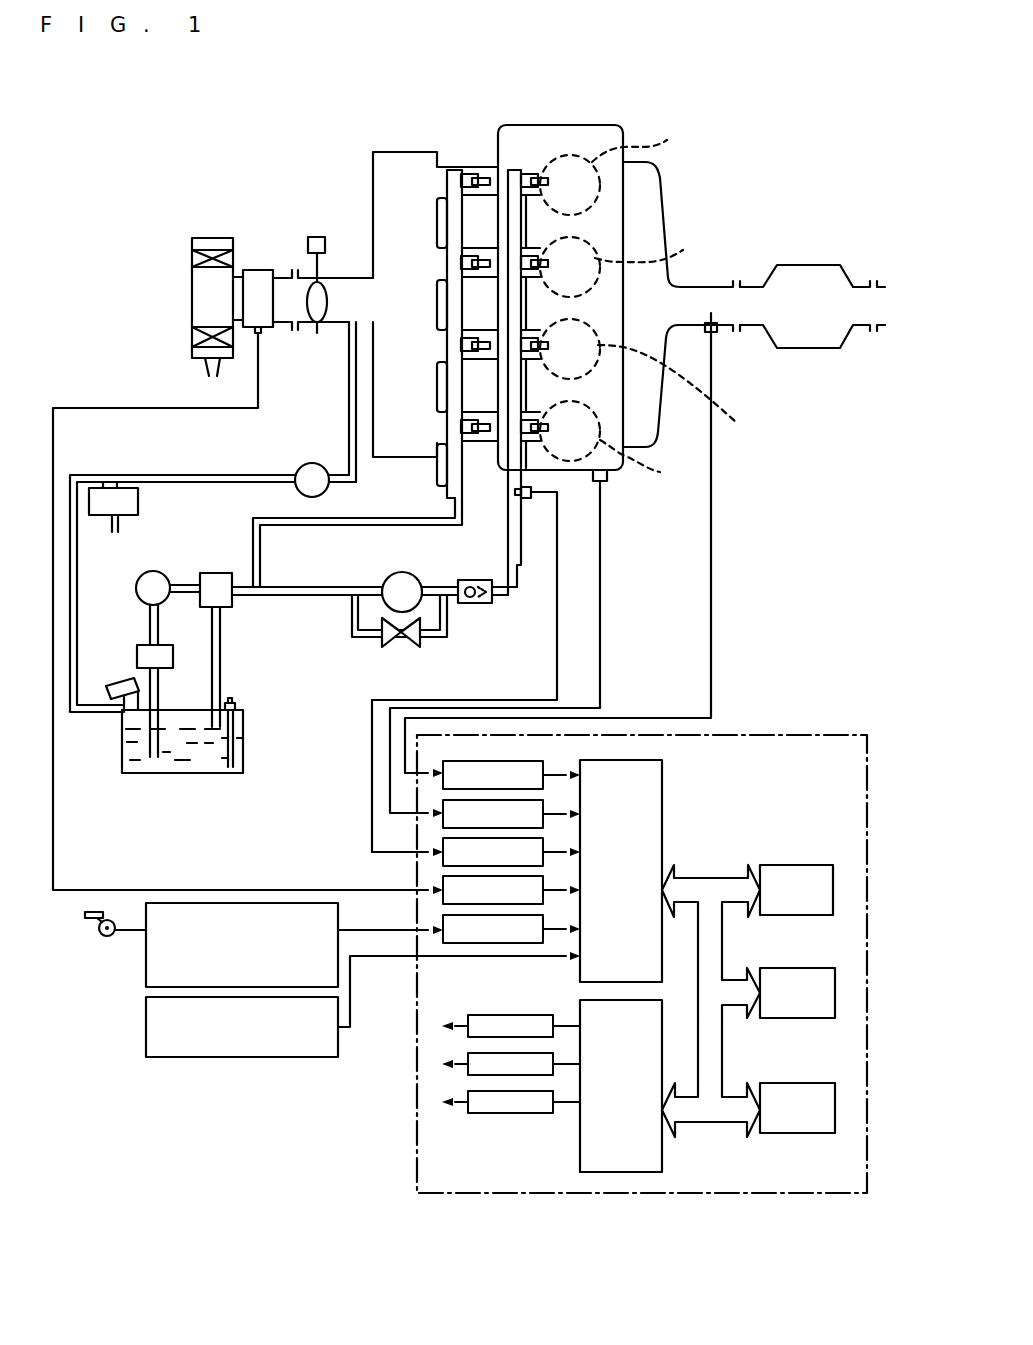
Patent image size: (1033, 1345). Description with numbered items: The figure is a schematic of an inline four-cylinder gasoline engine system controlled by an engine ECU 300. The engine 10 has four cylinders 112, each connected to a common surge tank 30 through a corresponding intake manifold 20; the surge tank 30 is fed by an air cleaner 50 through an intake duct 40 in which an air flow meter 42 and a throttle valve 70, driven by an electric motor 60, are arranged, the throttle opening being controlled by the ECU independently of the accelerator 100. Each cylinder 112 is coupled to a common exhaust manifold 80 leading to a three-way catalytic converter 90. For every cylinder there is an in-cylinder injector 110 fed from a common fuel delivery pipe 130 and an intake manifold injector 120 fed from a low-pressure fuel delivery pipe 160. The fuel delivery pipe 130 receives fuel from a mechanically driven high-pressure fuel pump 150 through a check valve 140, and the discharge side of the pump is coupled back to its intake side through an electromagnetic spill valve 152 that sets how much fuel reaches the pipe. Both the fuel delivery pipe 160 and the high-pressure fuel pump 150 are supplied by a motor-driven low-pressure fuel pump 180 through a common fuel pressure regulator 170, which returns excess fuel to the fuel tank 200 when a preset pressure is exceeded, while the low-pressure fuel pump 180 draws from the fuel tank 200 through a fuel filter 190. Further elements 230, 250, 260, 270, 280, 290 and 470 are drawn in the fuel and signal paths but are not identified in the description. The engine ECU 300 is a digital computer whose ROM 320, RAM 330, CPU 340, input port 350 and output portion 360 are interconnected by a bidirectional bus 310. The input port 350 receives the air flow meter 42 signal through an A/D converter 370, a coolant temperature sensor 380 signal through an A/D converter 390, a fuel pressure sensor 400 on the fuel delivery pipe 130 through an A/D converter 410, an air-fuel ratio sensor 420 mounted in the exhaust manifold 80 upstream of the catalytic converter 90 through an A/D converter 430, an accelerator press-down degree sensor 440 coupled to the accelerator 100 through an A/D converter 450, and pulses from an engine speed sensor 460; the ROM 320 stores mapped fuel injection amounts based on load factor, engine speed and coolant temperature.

The engine 10 is at (624, 124).
The intake manifold 20 is at (452, 168).
The surge tank 30 is at (392, 151).
The intake duct 40 is at (347, 278).
The air flow meter 42 is at (261, 270).
The air cleaner 50 is at (191, 298).
The electric motor 60 is at (314, 238).
The throttle valve 70 is at (327, 318).
The exhaust manifold 80 is at (665, 200).
The three-way catalytic converter 90 is at (810, 262).
The accelerator 100 is at (95, 928).
The in-cylinder injector 110 is at (565, 177).
The cylinder 112 is at (684, 308).
The intake manifold injector 120 is at (460, 178).
The fuel delivery pipe 130 is at (513, 169).
The check valve 140 is at (484, 605).
The high-pressure fuel pump 150 is at (387, 578).
The electromagnetic spill valve 152 is at (402, 648).
The fuel delivery pipe 160 is at (446, 481).
The fuel pressure regulator 170 is at (217, 573).
The low-pressure fuel pump 180 is at (155, 571).
The fuel filter 190 is at (138, 650).
The fuel tank 200 is at (178, 775).
The pressure regulator 230 is at (115, 482).
The low-pressure fuel pump 250 is at (317, 464).
The low-pressure fuel pipe 260 is at (85, 475).
The return pipe 270 is at (110, 530).
The fuel pipe 280 is at (236, 474).
The fuel pipe to delivery pipe 290 is at (355, 322).
The engine ECU 300 is at (822, 722).
The bidirectional bus 310 is at (708, 877).
The ROM 320 is at (782, 865).
The RAM 330 is at (782, 967).
The CPU 340 is at (782, 1082).
The input port 350 is at (663, 787).
The output portion 360 is at (663, 1160).
The A/D converter 370 is at (440, 889).
The coolant temperature sensor 380 is at (607, 482).
The A/D converter 390 is at (440, 812).
The fuel pressure sensor 400 is at (534, 499).
The A/D converter 410 is at (440, 850).
The air-fuel ratio sensor 420 is at (715, 335).
The A/D converter 430 is at (440, 773).
The accelerator press-down degree sensor 440 is at (146, 946).
The A/D converter 450 is at (440, 928).
The engine speed sensor 460 is at (146, 1027).
The output signal line 470 is at (460, 1030).